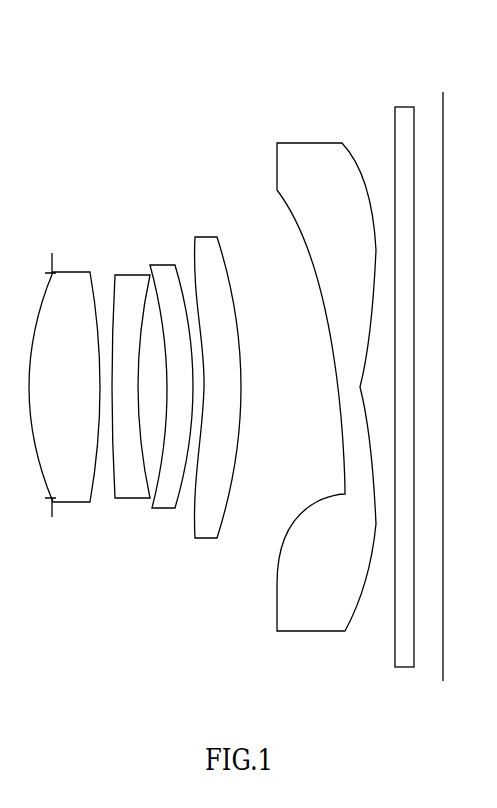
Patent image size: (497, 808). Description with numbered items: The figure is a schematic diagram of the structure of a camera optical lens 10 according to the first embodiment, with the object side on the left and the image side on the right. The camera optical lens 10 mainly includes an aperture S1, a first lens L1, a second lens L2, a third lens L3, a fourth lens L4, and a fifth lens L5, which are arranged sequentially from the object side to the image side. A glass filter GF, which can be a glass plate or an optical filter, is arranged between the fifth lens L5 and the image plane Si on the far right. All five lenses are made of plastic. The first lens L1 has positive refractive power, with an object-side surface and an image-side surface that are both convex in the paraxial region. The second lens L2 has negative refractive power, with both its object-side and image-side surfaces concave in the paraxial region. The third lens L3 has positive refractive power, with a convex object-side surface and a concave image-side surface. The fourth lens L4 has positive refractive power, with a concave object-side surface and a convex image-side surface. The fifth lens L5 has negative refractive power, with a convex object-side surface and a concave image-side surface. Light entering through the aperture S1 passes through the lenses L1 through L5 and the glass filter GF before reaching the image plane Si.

The camera optical lens 10 is at (252, 63).
The aperture S1 is at (43, 376).
The first lens L1 is at (64, 376).
The second lens L2 is at (131, 374).
The third lens L3 is at (170, 375).
The fourth lens L4 is at (217, 375).
The fifth lens L5 is at (326, 373).
The glass filter GF is at (409, 375).
The image plane Si is at (452, 375).